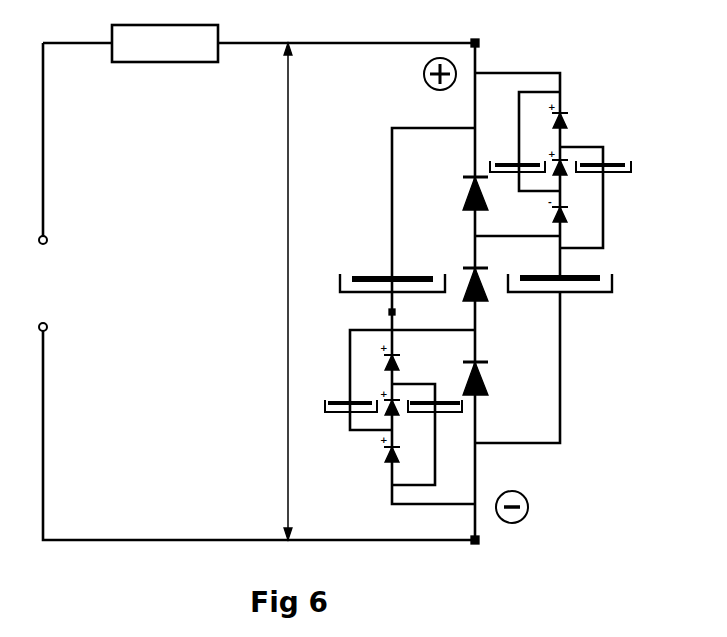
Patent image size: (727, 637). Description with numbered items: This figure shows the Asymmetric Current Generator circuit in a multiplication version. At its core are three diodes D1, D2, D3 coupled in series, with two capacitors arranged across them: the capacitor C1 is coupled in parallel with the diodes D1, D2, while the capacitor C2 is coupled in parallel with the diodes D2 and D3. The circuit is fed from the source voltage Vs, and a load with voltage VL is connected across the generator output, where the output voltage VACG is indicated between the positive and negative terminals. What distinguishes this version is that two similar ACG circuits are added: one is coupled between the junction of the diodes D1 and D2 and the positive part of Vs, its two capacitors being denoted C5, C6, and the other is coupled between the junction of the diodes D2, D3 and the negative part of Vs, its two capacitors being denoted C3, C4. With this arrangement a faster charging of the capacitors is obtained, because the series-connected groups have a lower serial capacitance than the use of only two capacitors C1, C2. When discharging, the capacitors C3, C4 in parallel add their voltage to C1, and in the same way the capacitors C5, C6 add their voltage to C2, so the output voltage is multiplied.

The load VL is at (165, 50).
The source voltage Vs is at (48, 283).
The AC ground voltage VACG is at (265, 291).
The diode D1 is at (466, 171).
The diode D2 is at (466, 264).
The diode D3 is at (488, 366).
The capacitor C1 is at (392, 280).
The capacitor C2 is at (562, 304).
The capacitor C3 is at (351, 417).
The capacitor C4 is at (435, 417).
The capacitor C5 is at (517, 178).
The capacitor C6 is at (604, 178).